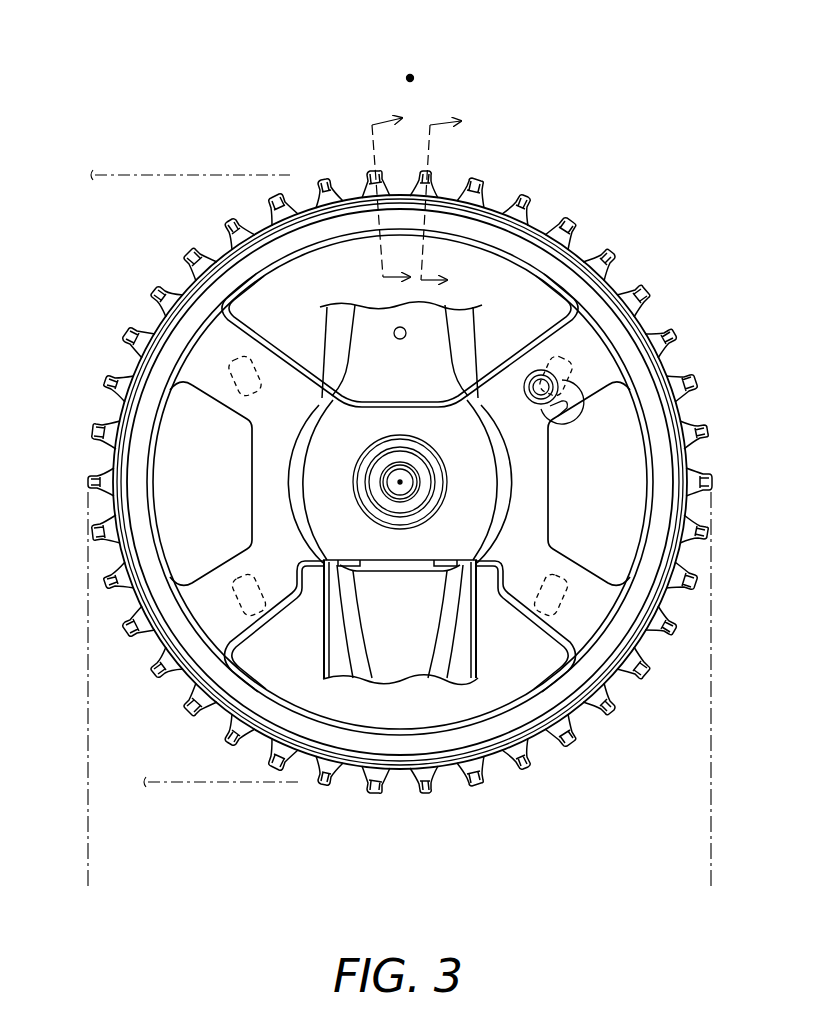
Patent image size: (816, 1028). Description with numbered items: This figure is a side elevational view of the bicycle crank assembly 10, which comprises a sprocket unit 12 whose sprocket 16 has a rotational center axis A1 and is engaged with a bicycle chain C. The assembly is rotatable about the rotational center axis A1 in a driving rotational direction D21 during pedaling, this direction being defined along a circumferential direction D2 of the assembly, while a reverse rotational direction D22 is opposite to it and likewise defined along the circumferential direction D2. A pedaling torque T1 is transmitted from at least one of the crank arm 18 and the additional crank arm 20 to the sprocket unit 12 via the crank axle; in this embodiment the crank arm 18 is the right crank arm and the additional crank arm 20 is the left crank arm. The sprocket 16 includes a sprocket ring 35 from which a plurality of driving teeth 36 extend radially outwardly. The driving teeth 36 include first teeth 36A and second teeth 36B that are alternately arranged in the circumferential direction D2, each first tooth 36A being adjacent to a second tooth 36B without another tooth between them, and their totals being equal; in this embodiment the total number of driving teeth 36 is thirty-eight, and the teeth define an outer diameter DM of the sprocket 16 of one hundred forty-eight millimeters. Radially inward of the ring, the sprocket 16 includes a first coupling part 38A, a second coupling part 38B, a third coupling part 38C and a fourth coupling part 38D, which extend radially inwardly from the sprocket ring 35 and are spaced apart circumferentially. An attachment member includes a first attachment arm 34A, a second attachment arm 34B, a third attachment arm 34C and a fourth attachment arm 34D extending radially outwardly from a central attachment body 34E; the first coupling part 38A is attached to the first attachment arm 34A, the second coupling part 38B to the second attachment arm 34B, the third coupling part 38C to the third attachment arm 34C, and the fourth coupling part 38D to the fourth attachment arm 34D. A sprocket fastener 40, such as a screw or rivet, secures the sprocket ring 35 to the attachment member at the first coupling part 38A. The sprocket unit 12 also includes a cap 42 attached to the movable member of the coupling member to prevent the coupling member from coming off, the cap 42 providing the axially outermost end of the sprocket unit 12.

The bicycle crank assembly 10 is at (534, 107).
The sprocket unit 12 is at (611, 198).
The sprocket 16 is at (652, 272).
The crank arm 18 is at (418, 686).
The additional crank arm 20 is at (367, 298).
The first attachment arm 34A is at (537, 366).
The second attachment arm 34B is at (262, 357).
The third attachment arm 34C is at (557, 558).
The fourth attachment arm 34D is at (250, 547).
The attachment body 34E is at (317, 458).
The sprocket ring 35 is at (539, 248).
The driving teeth 36 is at (520, 186).
The first tooth 36A is at (713, 482).
The second tooth 36B is at (709, 534).
The first coupling part 38A is at (584, 394).
The second coupling part 38B is at (214, 386).
The third coupling part 38C is at (562, 628).
The fourth coupling part 38D is at (238, 628).
The sprocket fastener 40 is at (546, 412).
The cap 42 is at (402, 549).
The rotational center axis A1 is at (402, 482).
The bicycle chain C is at (157, 167).
The circumferential direction D2 is at (455, 38).
The driving rotational direction D21 is at (410, 78).
The reverse rotational direction D22 is at (410, 78).
The pedaling torque T1 is at (205, 125).
The outer diameter DM is at (709, 872).